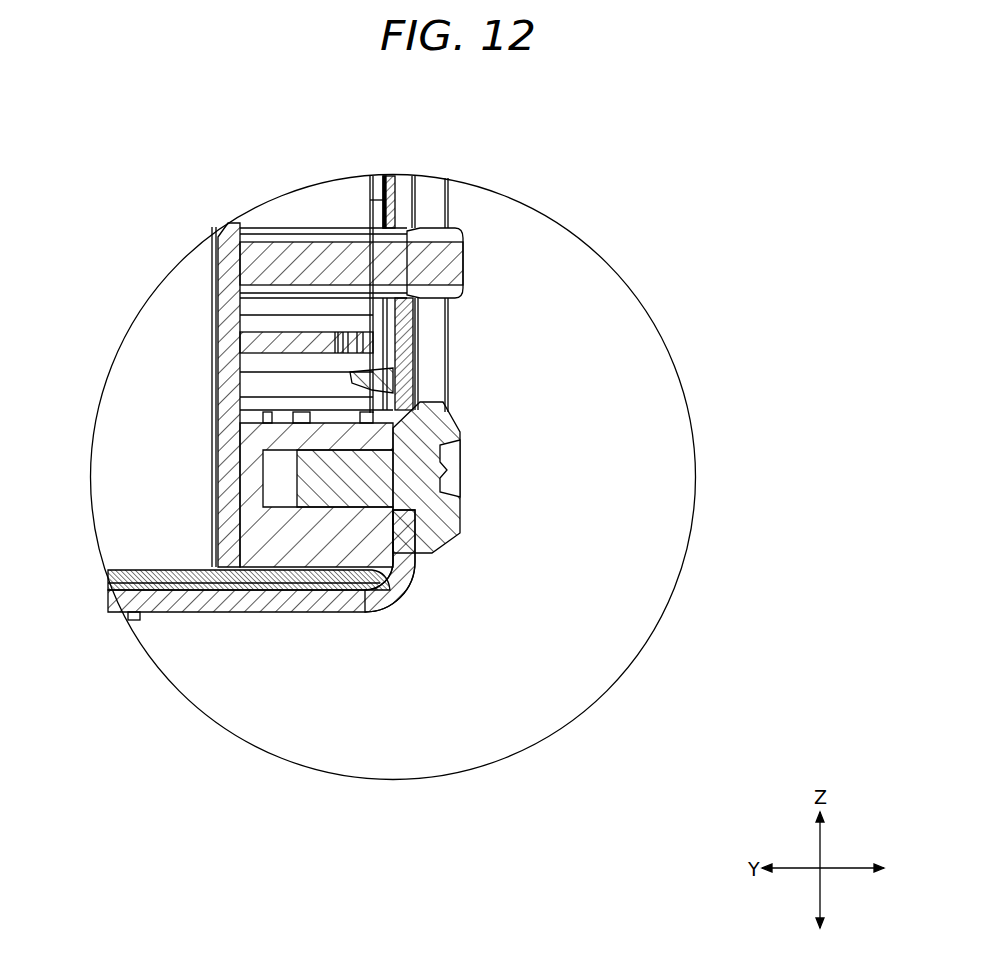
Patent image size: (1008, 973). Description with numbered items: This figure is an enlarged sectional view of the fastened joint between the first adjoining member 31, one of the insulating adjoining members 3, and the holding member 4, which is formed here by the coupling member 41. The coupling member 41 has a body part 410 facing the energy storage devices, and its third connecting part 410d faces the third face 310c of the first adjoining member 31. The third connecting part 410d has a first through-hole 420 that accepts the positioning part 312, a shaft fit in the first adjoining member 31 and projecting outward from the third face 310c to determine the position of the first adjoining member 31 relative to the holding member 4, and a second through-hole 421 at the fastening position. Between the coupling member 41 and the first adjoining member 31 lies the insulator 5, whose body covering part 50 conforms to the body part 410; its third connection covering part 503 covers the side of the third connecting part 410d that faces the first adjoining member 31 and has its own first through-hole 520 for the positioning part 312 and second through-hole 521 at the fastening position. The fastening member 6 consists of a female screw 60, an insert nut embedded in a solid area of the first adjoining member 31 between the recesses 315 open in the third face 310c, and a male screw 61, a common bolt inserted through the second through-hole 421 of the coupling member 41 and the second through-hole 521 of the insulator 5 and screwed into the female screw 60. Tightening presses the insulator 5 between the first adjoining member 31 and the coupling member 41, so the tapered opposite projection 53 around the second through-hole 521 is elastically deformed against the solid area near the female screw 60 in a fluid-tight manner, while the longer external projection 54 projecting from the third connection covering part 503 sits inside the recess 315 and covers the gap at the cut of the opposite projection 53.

The adjoining member 3 is at (180, 360).
The first adjoining member 31 is at (126, 369).
The holding member 4 is at (415, 369).
The coupling member 41 is at (486, 511).
The body part 410 is at (486, 511).
The third connecting part 410d is at (486, 511).
The first through-hole 420 is at (402, 212).
The second through-hole 421 is at (460, 463).
The insulator 5 is at (420, 387).
The body covering part 50 is at (575, 380).
The third connection covering part 503 is at (575, 380).
The first through-hole 520 is at (372, 222).
The second through-hole 521 is at (460, 482).
The opposite projection 53 is at (393, 563).
The external projection 54 is at (332, 378).
The fastening member 6 is at (424, 576).
The female screw 60 is at (373, 530).
The male screw 61 is at (447, 517).
The third face 310c is at (376, 215).
The positioning part 312 is at (461, 240).
The recess 315 is at (450, 310).